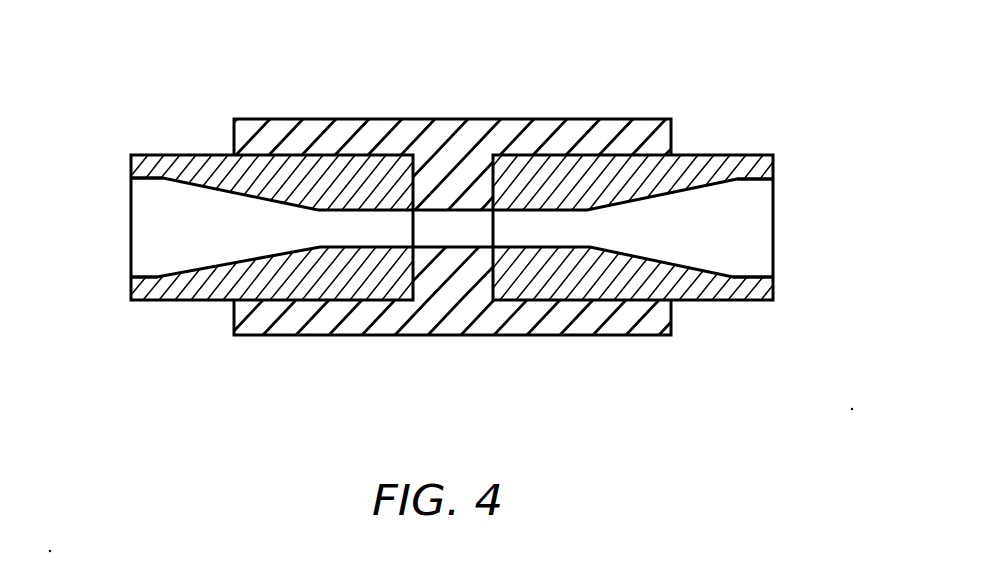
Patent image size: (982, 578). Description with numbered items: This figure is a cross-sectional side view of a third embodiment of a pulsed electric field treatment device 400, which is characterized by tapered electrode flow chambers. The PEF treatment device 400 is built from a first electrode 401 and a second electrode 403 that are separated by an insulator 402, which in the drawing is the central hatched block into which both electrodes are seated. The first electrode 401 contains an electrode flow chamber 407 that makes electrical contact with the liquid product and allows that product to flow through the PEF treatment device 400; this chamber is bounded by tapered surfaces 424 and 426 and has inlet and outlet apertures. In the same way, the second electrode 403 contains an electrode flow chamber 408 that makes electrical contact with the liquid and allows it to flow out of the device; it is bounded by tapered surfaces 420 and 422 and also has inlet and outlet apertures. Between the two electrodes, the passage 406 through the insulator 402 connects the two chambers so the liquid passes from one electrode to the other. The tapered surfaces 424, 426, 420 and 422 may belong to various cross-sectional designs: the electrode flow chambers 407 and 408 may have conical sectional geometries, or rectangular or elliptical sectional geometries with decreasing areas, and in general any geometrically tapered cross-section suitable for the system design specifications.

The pulsed electric field treatment device 400 is at (168, 337).
The first electrode 401 is at (226, 222).
The insulator 402 is at (462, 138).
The second electrode 403 is at (681, 222).
The central bore 406 is at (457, 233).
The electrode flow chamber 407 is at (265, 242).
The electrode flow chamber 408 is at (650, 242).
The tapered surface 420 is at (677, 192).
The tapered surface 422 is at (657, 262).
The tapered surface 424 is at (225, 193).
The tapered surface 426 is at (227, 260).